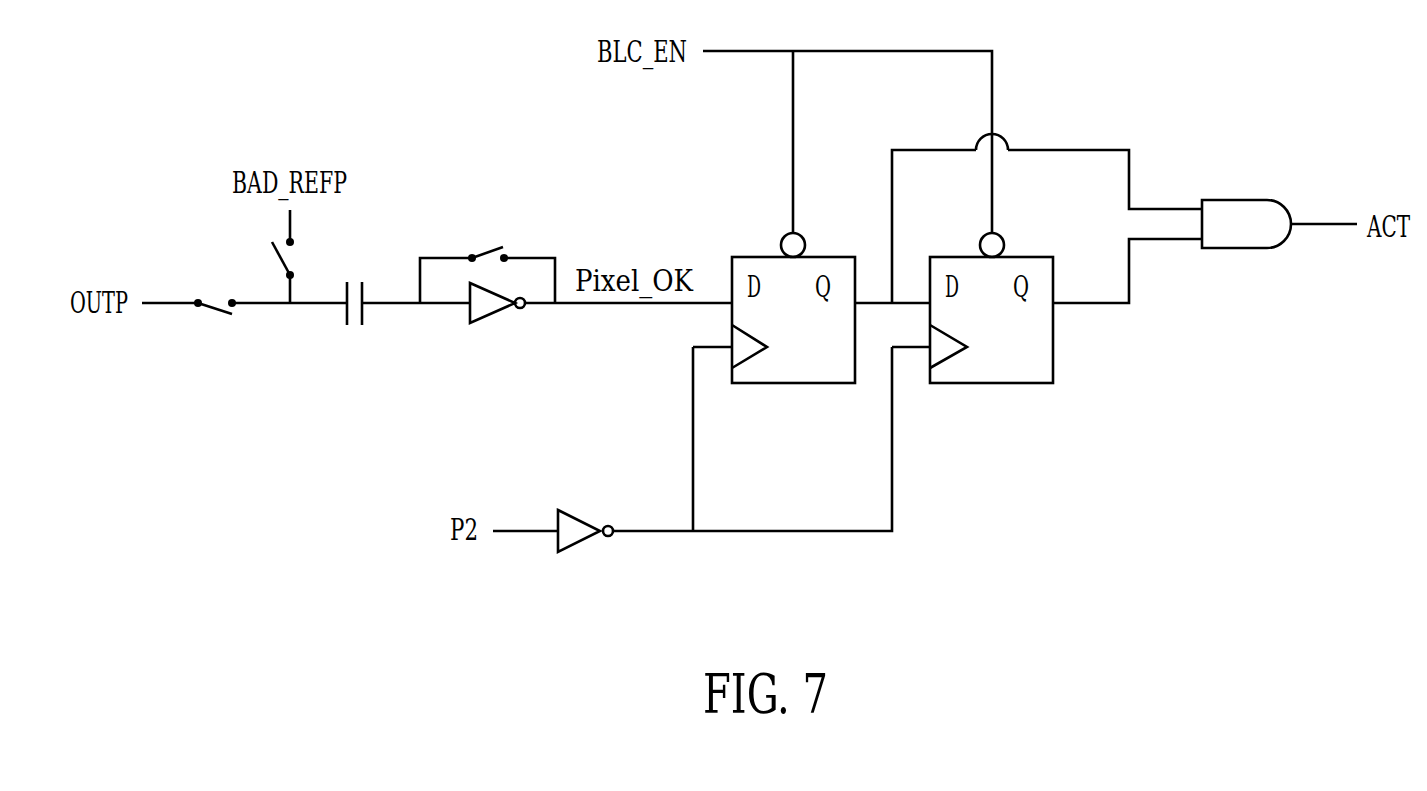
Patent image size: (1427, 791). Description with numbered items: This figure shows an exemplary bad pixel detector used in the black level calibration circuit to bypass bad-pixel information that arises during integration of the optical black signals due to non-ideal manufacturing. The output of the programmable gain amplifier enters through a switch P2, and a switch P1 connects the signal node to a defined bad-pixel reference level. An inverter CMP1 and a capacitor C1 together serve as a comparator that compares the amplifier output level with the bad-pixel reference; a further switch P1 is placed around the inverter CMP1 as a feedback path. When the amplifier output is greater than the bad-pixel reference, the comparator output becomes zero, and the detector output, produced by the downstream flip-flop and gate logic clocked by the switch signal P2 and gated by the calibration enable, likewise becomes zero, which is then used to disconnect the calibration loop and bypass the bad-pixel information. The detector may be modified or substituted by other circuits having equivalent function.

The switch P1 is at (368, 256).
The switch P2 is at (215, 333).
The capacitor C1 is at (355, 325).
The inverter CMP1 is at (493, 325).